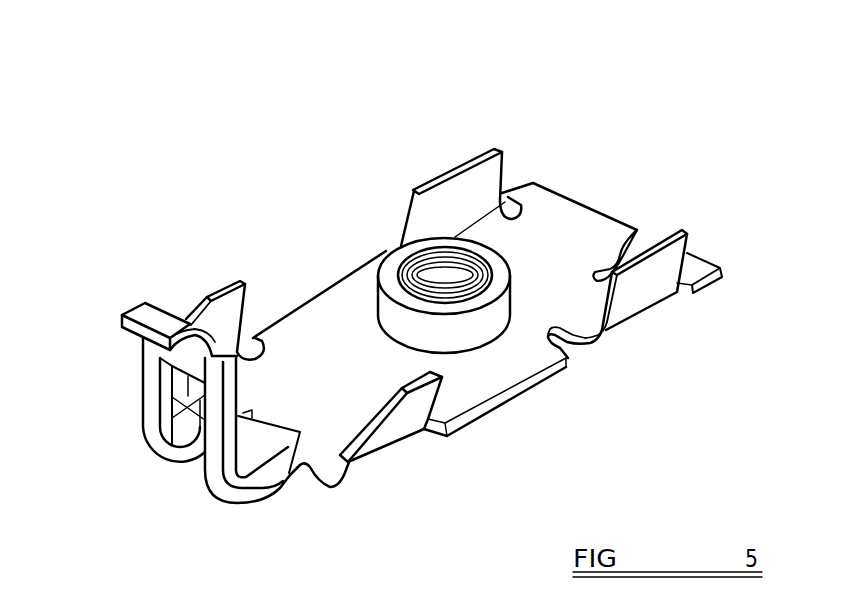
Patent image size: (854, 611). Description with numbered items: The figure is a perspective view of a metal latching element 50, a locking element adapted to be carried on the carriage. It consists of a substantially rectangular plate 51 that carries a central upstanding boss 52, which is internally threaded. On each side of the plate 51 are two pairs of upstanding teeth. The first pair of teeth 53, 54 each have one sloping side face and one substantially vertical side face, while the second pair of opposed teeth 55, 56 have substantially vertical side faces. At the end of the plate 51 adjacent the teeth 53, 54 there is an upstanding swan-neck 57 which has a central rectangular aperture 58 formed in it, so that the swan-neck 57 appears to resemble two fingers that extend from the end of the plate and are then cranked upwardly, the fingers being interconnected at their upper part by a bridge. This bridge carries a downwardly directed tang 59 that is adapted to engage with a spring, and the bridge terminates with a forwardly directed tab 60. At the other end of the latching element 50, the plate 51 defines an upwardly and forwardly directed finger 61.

The metal latching element 50 is at (414, 136).
The plate 51 is at (470, 378).
The upstanding boss 52 is at (540, 230).
The tooth 53 is at (231, 279).
The tooth 54 is at (393, 436).
The tooth 55 is at (474, 152).
The tooth 56 is at (667, 260).
The swan-neck 57 is at (209, 499).
The rectangular aperture 58 is at (198, 464).
The tang 59 is at (177, 378).
The tab 60 is at (122, 333).
The finger 61 is at (592, 226).